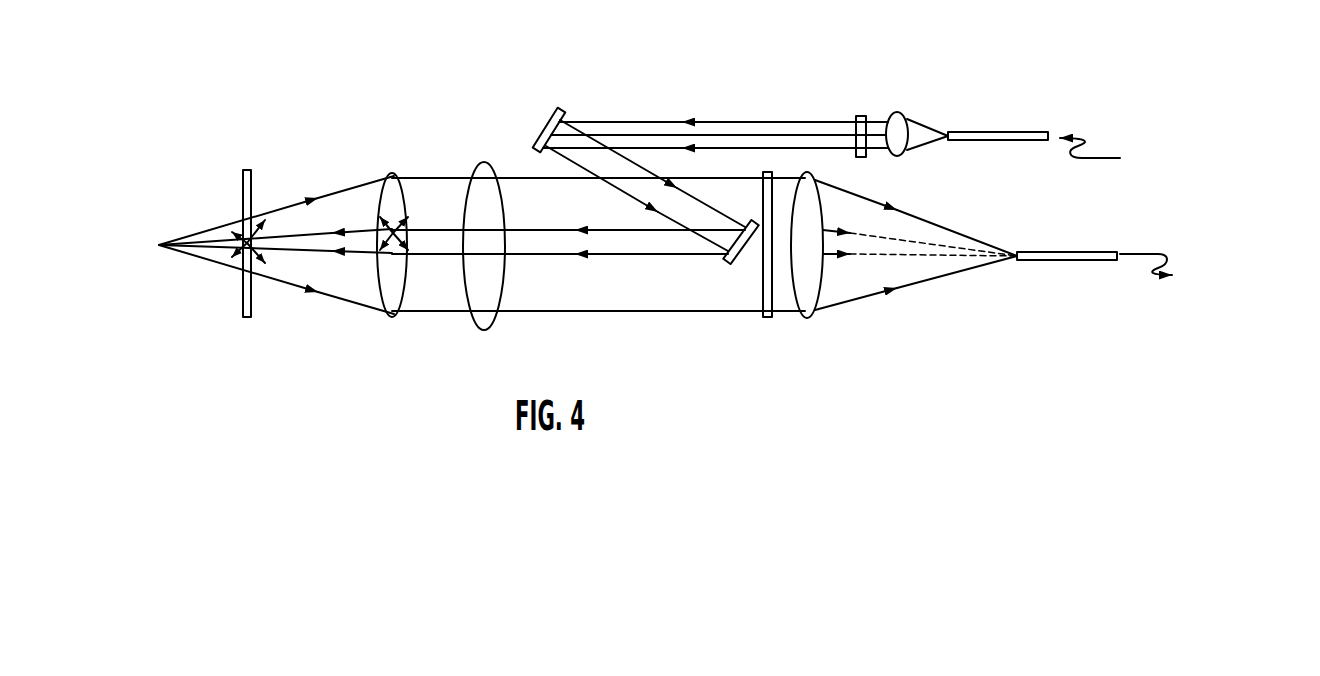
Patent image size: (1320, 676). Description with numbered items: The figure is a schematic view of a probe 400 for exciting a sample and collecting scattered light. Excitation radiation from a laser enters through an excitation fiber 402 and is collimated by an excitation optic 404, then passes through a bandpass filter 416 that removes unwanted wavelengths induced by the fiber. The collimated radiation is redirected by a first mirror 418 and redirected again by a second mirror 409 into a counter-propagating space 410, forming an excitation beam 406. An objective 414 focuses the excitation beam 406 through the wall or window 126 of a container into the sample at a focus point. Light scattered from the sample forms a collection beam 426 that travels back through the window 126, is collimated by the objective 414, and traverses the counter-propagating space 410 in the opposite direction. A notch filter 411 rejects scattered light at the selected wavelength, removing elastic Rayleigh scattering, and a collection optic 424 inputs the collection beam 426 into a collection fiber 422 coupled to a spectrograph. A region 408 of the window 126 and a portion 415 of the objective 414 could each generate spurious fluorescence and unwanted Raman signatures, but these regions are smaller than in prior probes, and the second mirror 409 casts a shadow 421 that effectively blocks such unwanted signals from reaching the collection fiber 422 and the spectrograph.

The probe 400 is at (425, 95).
The excitation fiber 402 is at (966, 132).
The excitation optic 404 is at (898, 112).
The excitation beam 406 is at (295, 253).
The region 408 is at (219, 212).
The second mirror 409 is at (738, 261).
The counter-propagating space 410 is at (497, 320).
The notch filter 411 is at (767, 318).
The objective 414 is at (390, 320).
The portion 415 is at (364, 208).
The bandpass filter 416 is at (860, 116).
The first mirror 418 is at (548, 113).
The shadow 421 is at (898, 262).
The collection fiber 422 is at (1029, 252).
The collection optic 424 is at (808, 172).
The collection beam 426 is at (345, 303).
The window 126 is at (247, 170).